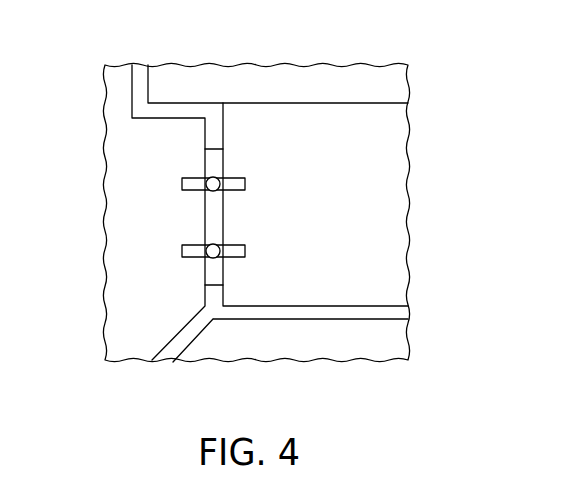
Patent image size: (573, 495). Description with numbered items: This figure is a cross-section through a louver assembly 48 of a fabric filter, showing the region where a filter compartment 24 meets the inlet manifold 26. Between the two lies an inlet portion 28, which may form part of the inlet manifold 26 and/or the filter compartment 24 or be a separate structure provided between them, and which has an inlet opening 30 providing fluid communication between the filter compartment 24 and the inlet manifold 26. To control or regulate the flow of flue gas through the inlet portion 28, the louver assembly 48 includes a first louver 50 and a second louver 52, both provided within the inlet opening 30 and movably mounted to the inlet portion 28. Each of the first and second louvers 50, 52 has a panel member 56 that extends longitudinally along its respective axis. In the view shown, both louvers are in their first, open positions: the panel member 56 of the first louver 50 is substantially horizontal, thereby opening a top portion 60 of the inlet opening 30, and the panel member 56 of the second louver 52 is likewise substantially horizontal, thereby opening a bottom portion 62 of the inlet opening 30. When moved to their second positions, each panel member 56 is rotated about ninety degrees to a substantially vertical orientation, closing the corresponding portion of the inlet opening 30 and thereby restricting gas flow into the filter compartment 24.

The filter compartment 24 is at (152, 331).
The inlet manifold 26 is at (388, 143).
The inlet portion 28 is at (224, 133).
The inlet opening 30 is at (268, 214).
The louver assembly 48 is at (128, 257).
The first louver 50 is at (182, 185).
The second louver 52 is at (182, 250).
The panel member 56 is at (193, 176).
The top portion 60 is at (245, 162).
The bottom portion 62 is at (244, 274).